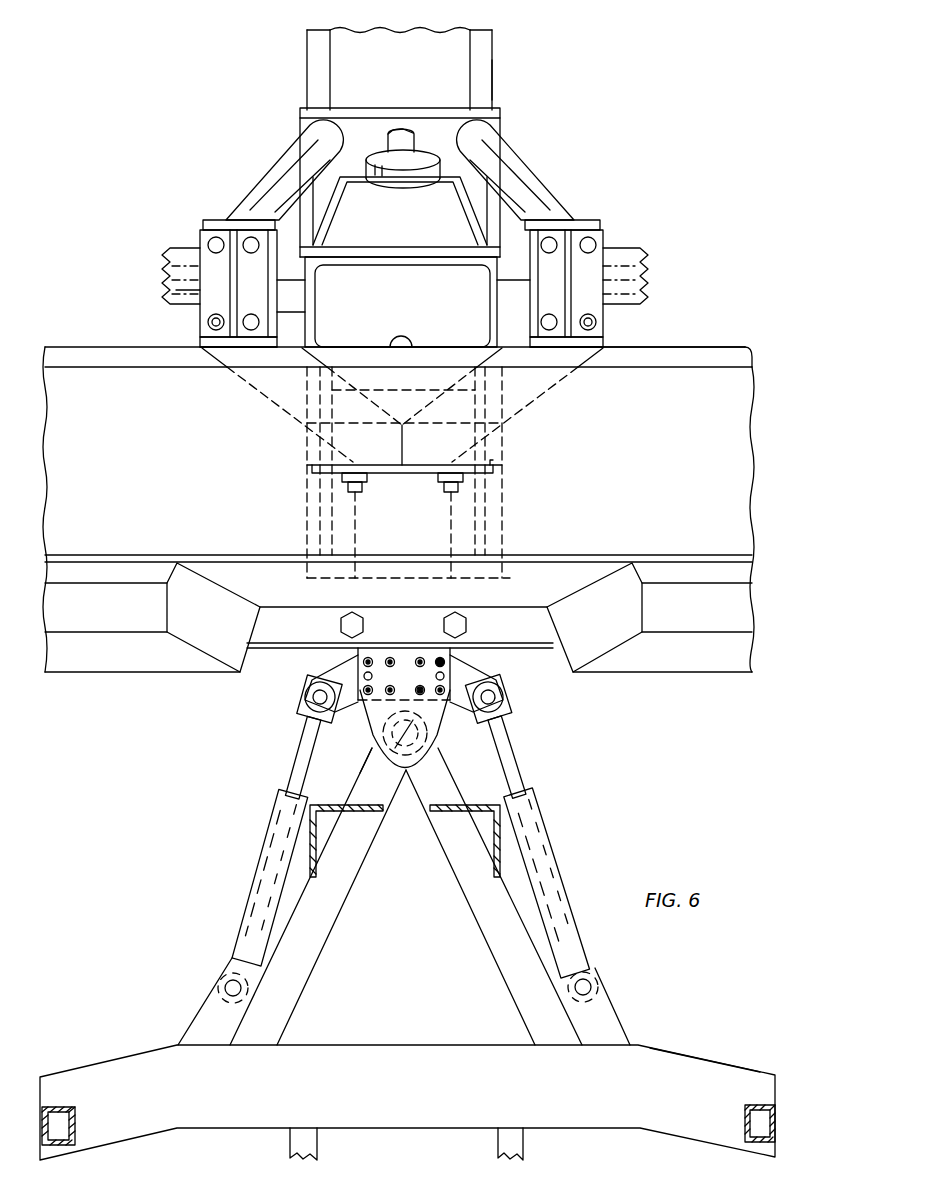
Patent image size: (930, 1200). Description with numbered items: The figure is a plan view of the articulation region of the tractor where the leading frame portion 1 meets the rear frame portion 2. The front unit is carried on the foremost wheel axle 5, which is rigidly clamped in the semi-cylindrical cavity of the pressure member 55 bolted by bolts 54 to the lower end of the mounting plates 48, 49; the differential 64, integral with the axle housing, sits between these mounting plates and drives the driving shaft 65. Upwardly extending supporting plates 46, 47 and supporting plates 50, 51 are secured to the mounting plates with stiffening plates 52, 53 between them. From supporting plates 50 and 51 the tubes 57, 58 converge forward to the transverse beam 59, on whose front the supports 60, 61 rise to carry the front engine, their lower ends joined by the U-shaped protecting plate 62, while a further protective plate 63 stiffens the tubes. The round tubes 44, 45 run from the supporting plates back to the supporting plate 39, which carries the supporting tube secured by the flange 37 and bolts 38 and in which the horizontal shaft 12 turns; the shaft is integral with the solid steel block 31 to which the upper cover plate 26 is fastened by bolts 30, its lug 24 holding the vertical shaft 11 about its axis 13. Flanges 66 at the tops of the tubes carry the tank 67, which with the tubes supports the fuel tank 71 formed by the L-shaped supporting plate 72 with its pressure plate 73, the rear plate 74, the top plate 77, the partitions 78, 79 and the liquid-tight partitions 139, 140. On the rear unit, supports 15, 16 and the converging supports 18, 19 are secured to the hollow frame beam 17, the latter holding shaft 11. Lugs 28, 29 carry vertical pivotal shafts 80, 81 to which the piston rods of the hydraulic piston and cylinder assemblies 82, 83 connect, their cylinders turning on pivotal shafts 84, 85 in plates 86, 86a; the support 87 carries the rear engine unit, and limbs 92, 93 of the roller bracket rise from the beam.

The leading frame portion 1 is at (497, 72).
The rear frame portion 2 is at (714, 1055).
The foremost wheel axle 5 is at (176, 303).
The vertical shaft 11 is at (378, 735).
The horizontal shaft 12 is at (506, 490).
The axis of vertical shaft 13 is at (373, 771).
The horizontal support 15 is at (497, 1145).
The horizontal support 16 is at (290, 1145).
The hollow frame beam 17 is at (387, 1042).
The support 18 is at (495, 935).
The support 19 is at (343, 886).
The lug 24 is at (440, 712).
The upper cover plate 26 is at (403, 660).
The lug 28 is at (485, 676).
The lug 29 is at (338, 673).
The bolts 30 is at (420, 688).
The solid steel block 31 is at (365, 626).
The flange 37 is at (420, 487).
The bolts 38 is at (356, 497).
The supporting plate 39 is at (503, 467).
The round tube 44 is at (262, 385).
The round tube 45 is at (538, 380).
The supporting plate 46 is at (222, 368).
The supporting plate 47 is at (578, 352).
The mounting plate 48 is at (210, 268).
The mounting plate 49 is at (592, 262).
The supporting plate 50 is at (218, 215).
The supporting plate 51 is at (600, 215).
The stiffening plate 52 is at (270, 290).
The stiffening plate 53 is at (567, 273).
The bolts 54 is at (210, 323).
The pressure member 55 is at (290, 312).
The tube 57 is at (282, 161).
The tube 58 is at (535, 172).
The transverse beam 59 is at (430, 115).
The support 60 is at (307, 48).
The support 61 is at (488, 45).
The U-shaped protecting plate 62 is at (330, 85).
The further protective plate 63 is at (348, 178).
The differential 64 is at (401, 302).
The driving shaft 65 is at (170, 271).
The flanges 66 is at (648, 300).
The tank 67 is at (378, 275).
The fuel tank 71 is at (75, 346).
The L-shaped supporting plate 72 is at (240, 575).
The pressure plate 73 is at (503, 623).
The plate 74 is at (110, 662).
The top plate 77 is at (700, 385).
The partition 78 is at (185, 603).
The partition 79 is at (622, 612).
The vertical pivotal shaft 80 is at (318, 697).
The vertical pivotal shaft 81 is at (492, 697).
The hydraulic piston and cylinder assembly 82 is at (262, 838).
The hydraulic piston and cylinder assembly 83 is at (565, 855).
The pivotal shaft 84 is at (225, 988).
The pivotal shaft 85 is at (590, 987).
The plate 86 is at (192, 1020).
The plate 86a is at (610, 1025).
The support 87 is at (368, 812).
The limb 92 is at (78, 1120).
The limb 93 is at (745, 1118).
The partition 139 is at (330, 532).
The partition 140 is at (504, 530).